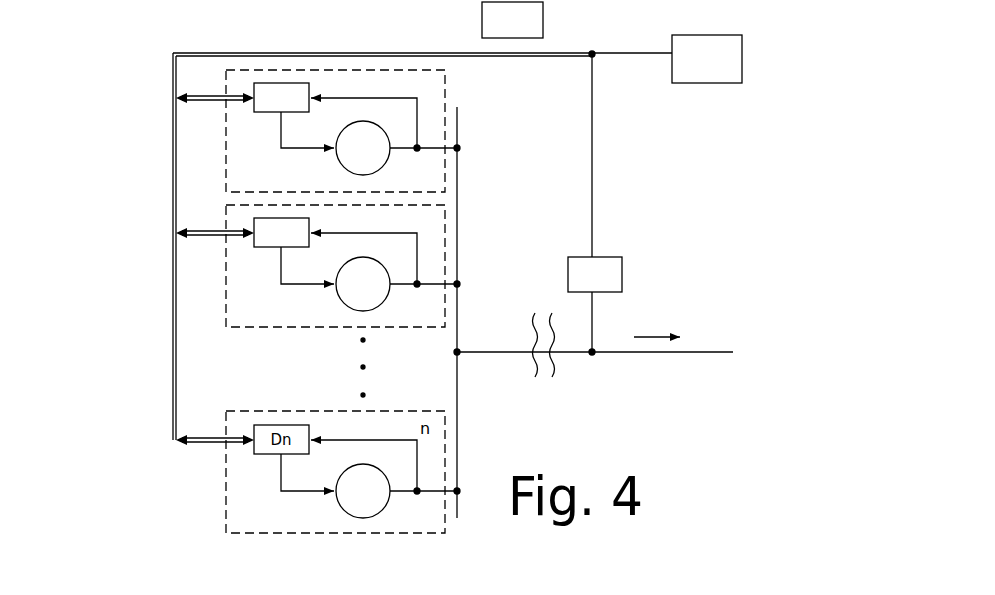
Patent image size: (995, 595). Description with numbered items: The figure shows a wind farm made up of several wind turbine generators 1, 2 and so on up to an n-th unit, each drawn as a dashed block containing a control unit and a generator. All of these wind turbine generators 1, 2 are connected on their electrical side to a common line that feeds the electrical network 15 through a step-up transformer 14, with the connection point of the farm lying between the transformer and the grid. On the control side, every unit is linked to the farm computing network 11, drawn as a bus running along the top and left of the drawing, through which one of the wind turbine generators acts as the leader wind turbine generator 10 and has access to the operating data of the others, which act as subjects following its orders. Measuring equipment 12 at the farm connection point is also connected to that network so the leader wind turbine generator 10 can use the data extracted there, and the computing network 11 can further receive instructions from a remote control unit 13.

The leader wind turbine generator 10 is at (461, 33).
The farm computing network 11 is at (168, 282).
The measuring equipment 12 is at (607, 270).
The remote control unit 13 is at (727, 60).
The step-up transformer 14 is at (541, 386).
The electrical network 15 is at (615, 348).
The wind turbine generator 1 is at (318, 131).
The wind turbine generator 2 is at (318, 266).